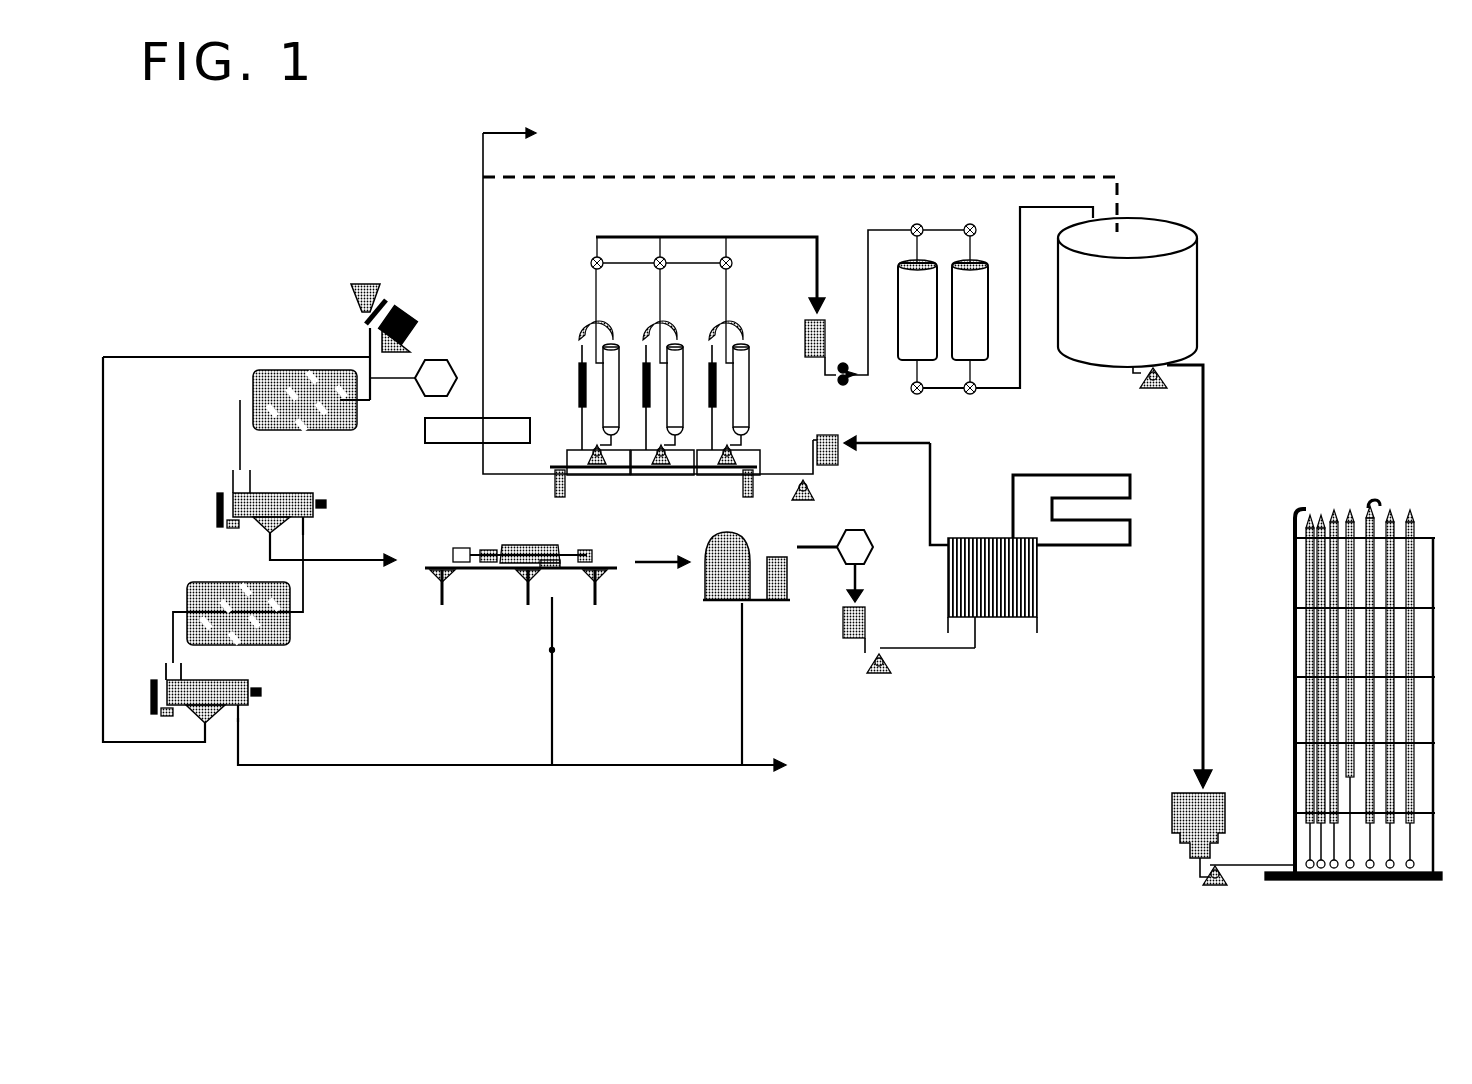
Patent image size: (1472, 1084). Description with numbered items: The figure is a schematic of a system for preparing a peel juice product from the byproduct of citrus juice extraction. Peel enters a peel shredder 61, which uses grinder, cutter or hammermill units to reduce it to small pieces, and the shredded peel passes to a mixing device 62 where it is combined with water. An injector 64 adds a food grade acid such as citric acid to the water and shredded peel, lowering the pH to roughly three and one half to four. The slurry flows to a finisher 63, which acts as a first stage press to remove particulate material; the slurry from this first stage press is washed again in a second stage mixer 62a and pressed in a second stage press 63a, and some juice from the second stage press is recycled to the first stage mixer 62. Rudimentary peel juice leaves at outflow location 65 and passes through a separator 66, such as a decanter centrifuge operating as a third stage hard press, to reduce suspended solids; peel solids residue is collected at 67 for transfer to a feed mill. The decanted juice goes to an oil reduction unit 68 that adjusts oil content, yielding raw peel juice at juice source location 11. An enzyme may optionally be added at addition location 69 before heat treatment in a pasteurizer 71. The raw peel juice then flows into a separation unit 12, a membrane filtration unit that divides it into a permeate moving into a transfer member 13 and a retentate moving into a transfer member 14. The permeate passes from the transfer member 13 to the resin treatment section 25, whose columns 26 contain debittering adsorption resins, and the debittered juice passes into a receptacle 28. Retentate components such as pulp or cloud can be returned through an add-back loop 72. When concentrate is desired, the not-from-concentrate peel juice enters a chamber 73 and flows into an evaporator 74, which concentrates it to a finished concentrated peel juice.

The juice source location 11 is at (812, 552).
The separation unit 12 is at (572, 318).
The transfer member 13 is at (796, 237).
The transfer member 14 is at (538, 372).
The resin treatment section 25 is at (893, 252).
The columns 26 is at (988, 335).
The receptacle 28 is at (1199, 290).
The peel shredder 61 is at (402, 302).
The mixing device 62 is at (230, 410).
The mixer 62a is at (176, 625).
The finisher 63 is at (215, 505).
The second stage press 63a is at (262, 712).
The injector 64 is at (416, 393).
The outflow location 65 is at (366, 556).
The separator 66 is at (505, 597).
The collection location 67 is at (776, 772).
The oil reduction unit 68 is at (720, 536).
The addition location 69 is at (890, 506).
The pasteurizer 71 is at (1040, 598).
The add-back loop 72 is at (693, 177).
The chamber 73 is at (1172, 815).
The evaporator 74 is at (1292, 665).